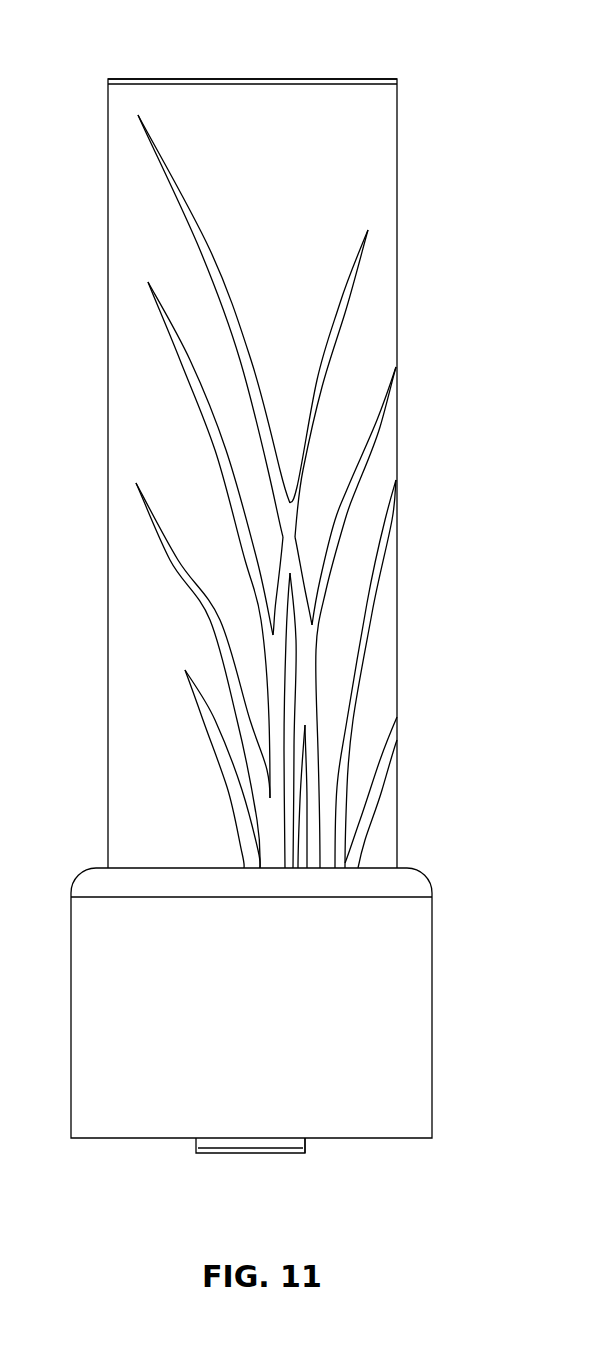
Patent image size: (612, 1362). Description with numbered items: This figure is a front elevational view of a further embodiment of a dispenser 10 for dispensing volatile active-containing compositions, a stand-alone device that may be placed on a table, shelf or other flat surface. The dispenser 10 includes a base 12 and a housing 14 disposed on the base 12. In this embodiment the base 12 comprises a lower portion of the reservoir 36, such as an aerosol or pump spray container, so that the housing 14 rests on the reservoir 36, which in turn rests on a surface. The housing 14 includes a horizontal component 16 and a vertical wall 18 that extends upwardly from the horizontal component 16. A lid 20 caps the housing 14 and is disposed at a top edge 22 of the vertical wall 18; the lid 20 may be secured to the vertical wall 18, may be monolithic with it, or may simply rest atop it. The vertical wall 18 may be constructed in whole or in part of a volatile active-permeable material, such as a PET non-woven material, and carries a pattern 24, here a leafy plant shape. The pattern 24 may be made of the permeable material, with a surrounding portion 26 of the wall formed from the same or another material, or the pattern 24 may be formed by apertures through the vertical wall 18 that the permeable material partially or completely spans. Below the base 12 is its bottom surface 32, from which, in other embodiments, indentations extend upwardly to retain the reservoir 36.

The dispenser 10 is at (128, 40).
The base 12 is at (295, 1155).
The housing 14 is at (433, 1018).
The horizontal component 16 is at (418, 870).
The vertical wall 18 is at (398, 477).
The lid 20 is at (310, 78).
The top edge 22 is at (400, 82).
The pattern 24 is at (320, 385).
The portion of the wall 26 is at (373, 317).
The bottom surface 32 is at (205, 1155).
The reservoir 36 is at (307, 1143).